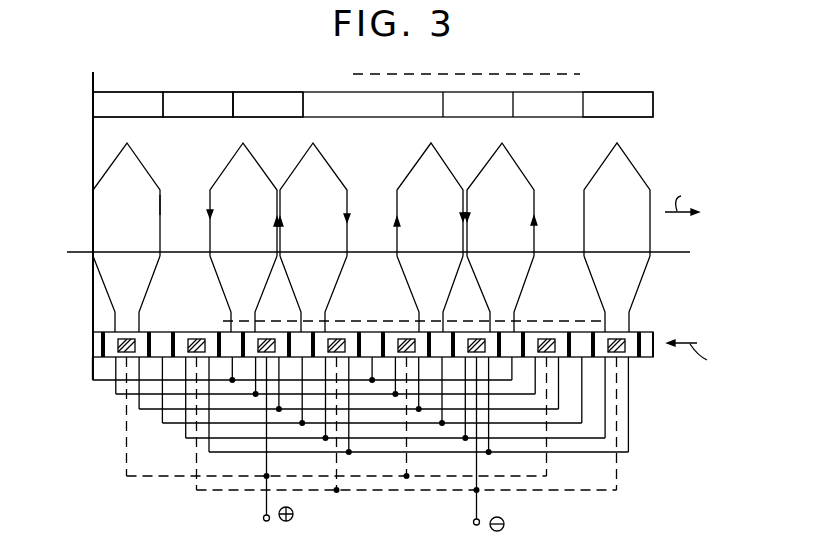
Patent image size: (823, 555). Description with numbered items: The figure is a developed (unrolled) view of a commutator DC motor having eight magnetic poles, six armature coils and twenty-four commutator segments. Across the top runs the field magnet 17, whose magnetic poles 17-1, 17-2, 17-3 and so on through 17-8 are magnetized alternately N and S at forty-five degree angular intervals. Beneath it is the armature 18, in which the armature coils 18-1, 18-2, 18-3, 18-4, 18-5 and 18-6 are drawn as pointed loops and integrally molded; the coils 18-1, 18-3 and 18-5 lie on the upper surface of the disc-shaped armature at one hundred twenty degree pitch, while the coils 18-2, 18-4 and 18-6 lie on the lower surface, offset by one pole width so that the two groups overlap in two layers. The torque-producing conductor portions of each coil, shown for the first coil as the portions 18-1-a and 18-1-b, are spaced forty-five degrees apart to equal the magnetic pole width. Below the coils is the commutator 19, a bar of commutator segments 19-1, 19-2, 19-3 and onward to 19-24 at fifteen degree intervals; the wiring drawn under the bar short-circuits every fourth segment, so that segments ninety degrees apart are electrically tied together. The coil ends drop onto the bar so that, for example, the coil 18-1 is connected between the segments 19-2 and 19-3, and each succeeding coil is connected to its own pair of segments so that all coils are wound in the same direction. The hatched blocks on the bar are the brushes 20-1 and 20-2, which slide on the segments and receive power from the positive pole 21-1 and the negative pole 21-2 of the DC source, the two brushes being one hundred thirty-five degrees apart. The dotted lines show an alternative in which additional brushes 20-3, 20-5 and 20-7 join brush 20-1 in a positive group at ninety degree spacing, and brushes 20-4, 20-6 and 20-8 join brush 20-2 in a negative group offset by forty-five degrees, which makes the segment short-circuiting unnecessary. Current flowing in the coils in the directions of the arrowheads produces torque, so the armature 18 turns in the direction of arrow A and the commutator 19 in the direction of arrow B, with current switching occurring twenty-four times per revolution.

The field magnet 17 is at (655, 96).
The magnetic pole 17-1 is at (110, 92).
The magnetic pole 17-2 is at (183, 92).
The magnetic pole 17-3 is at (258, 92).
The magnetic pole 17-8 is at (590, 92).
The armature 18 is at (738, 132).
The armature coil 18-1 is at (135, 155).
The conductor portion 18-1-a is at (93, 205).
The conductor portion 18-1-b is at (161, 207).
The armature coil 18-2 is at (251, 155).
The armature coil 18-3 is at (321, 155).
The armature coil 18-4 is at (439, 155).
The armature coil 18-5 is at (510, 155).
The armature coil 18-6 is at (625, 155).
The commutator 19 is at (653, 350).
The commutator segment 19-1 is at (92, 345).
The commutator segment 19-2 is at (107, 334).
The commutator segment 19-3 is at (160, 346).
The commutator segment 19-24 is at (636, 320).
The brush 20-1 is at (273, 332).
The brush 20-2 is at (481, 332).
The brush 20-3 is at (403, 332).
The brush 20-4 is at (614, 332).
The brush 20-5 is at (547, 332).
The brush 20-6 is at (202, 332).
The brush 20-7 is at (119, 332).
The brush 20-8 is at (334, 332).
The positive pole 21-1 is at (263, 519).
The negative pole 21-2 is at (473, 523).